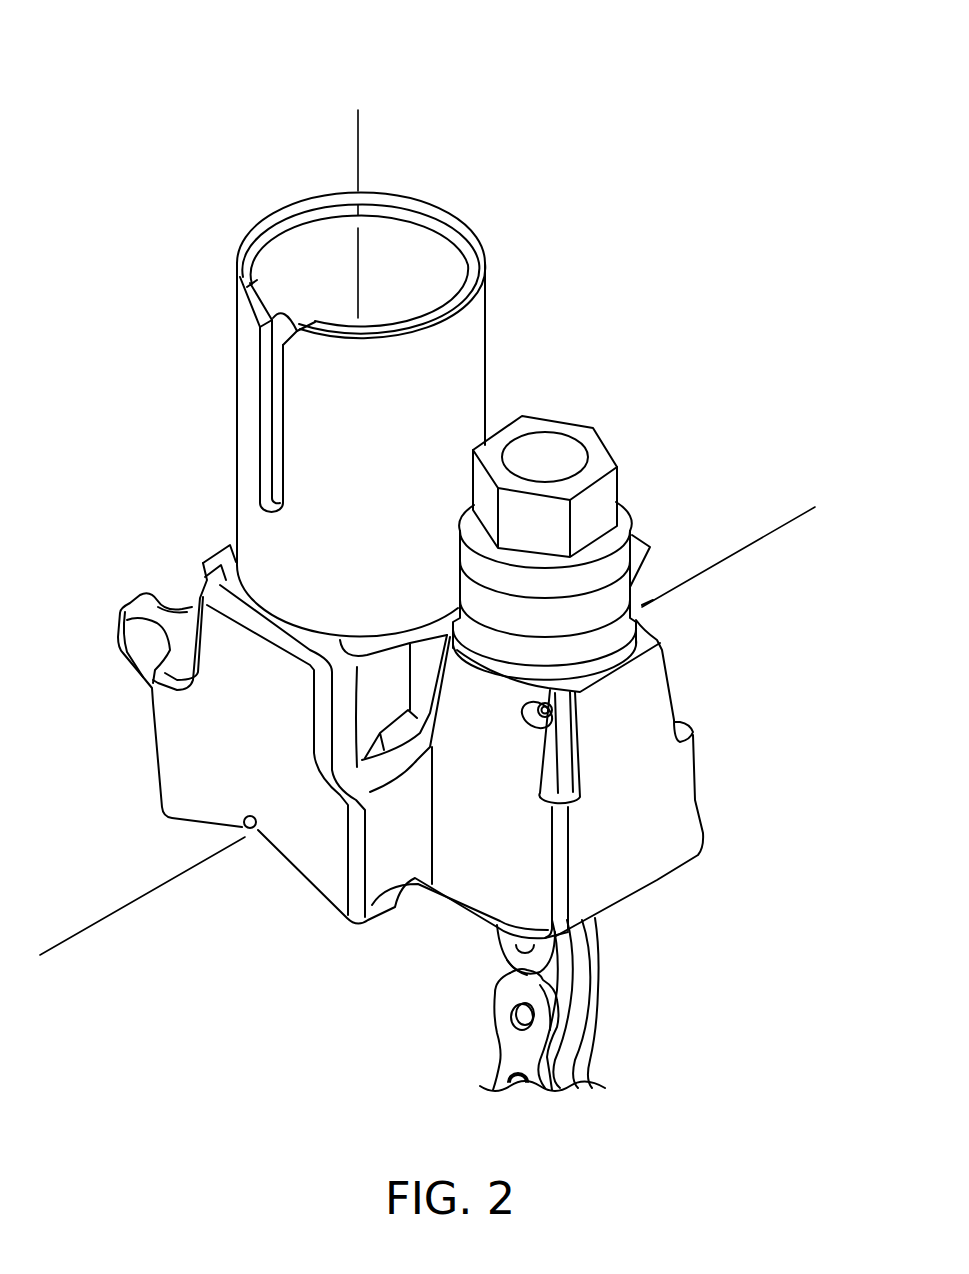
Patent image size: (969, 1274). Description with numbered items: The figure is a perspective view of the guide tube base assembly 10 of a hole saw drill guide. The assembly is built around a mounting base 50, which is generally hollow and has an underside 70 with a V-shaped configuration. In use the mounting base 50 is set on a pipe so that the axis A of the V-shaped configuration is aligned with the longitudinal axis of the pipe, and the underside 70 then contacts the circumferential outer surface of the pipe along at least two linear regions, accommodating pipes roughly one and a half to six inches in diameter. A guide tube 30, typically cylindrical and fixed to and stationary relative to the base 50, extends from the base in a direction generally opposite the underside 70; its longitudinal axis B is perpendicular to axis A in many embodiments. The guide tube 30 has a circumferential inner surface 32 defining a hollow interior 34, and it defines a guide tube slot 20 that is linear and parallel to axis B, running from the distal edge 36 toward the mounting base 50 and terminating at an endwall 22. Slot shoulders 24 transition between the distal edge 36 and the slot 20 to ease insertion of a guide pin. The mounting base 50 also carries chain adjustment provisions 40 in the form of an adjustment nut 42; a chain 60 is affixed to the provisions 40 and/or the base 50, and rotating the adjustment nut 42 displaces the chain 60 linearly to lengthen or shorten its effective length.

The guide tube base assembly 10 is at (55, 86).
The guide tube slot 20 is at (277, 398).
The endwall 22 is at (260, 483).
The slot shoulders 24 is at (268, 297).
The guide tube 30 is at (463, 367).
The circumferential inner surface 32 is at (312, 245).
The hollow interior 34 is at (273, 266).
The distal edge 36 is at (474, 231).
The chain adjustment provisions 40 is at (597, 460).
The adjustment nut 42 is at (597, 460).
The mounting base 50 is at (675, 794).
The chain 60 is at (588, 1008).
The underside 70 is at (190, 823).